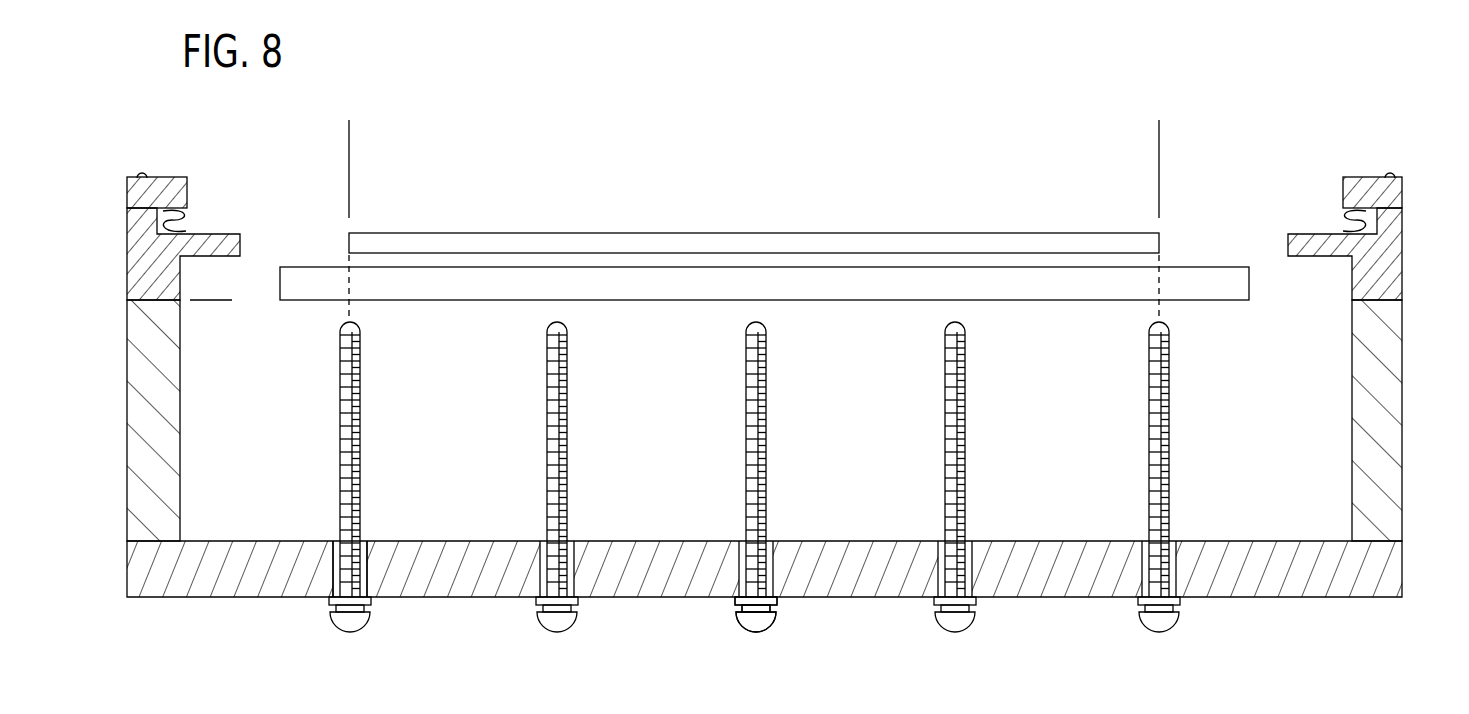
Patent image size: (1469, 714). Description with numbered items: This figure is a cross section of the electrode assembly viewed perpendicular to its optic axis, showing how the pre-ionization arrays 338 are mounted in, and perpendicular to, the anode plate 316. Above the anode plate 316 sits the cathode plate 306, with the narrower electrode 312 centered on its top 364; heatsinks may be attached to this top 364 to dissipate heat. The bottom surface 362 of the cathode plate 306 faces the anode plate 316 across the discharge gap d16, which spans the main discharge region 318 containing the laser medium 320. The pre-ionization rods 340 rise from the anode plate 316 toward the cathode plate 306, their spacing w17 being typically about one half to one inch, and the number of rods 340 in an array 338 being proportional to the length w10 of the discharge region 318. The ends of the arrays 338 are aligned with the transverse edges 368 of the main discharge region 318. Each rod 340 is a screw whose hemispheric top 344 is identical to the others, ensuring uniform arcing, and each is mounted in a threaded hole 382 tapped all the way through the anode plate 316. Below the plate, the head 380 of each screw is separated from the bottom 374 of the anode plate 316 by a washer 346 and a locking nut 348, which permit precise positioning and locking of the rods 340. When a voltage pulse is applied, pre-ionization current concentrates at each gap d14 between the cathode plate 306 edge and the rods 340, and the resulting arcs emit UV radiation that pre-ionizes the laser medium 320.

The cathode plate 306 is at (845, 283).
The electrode 312 is at (540, 243).
The anode plate 316 is at (248, 578).
The main discharge region 318 is at (867, 512).
The laser medium 320 is at (1058, 503).
The pre-ionization array 338 is at (1298, 415).
The pre-ionization rod 340 is at (358, 388).
The top 344 is at (363, 323).
The washer 346 is at (727, 605).
The locking nut 348 is at (762, 607).
The bottom surface 362 is at (682, 322).
The top 364 is at (1210, 250).
The transverse edge 368 is at (318, 322).
The bottom 374 is at (472, 605).
The head 380 is at (745, 622).
The threaded hole 382 is at (365, 568).
The gap d14 is at (1170, 315).
The discharge gap d16 is at (210, 300).
The spacing w17 is at (547, 465).
The length w10 is at (349, 167).